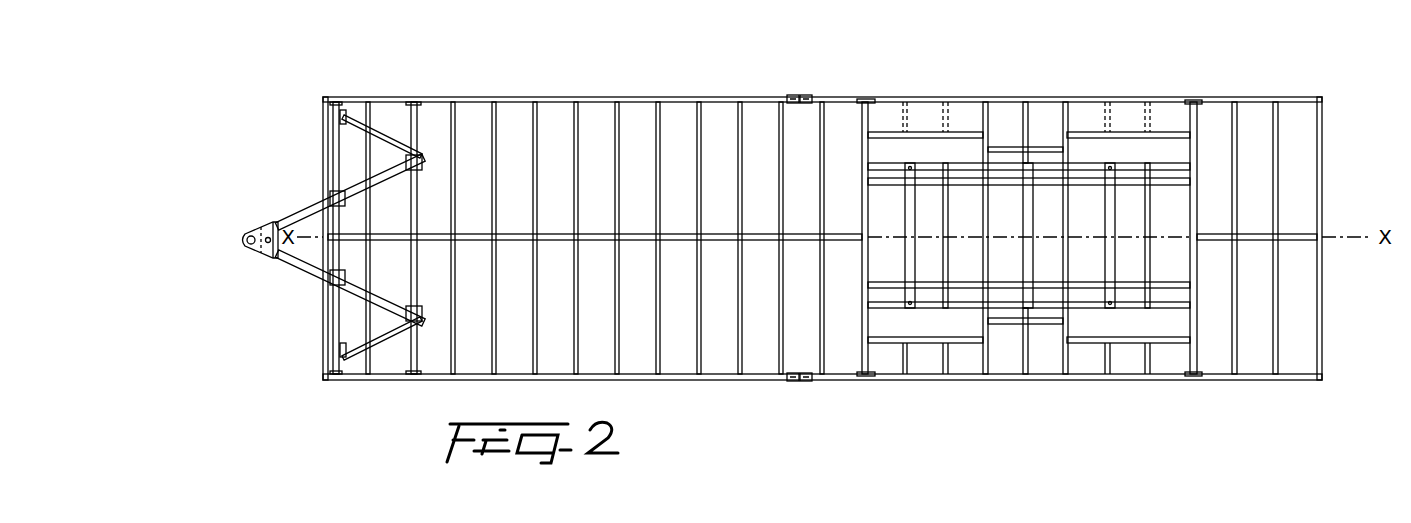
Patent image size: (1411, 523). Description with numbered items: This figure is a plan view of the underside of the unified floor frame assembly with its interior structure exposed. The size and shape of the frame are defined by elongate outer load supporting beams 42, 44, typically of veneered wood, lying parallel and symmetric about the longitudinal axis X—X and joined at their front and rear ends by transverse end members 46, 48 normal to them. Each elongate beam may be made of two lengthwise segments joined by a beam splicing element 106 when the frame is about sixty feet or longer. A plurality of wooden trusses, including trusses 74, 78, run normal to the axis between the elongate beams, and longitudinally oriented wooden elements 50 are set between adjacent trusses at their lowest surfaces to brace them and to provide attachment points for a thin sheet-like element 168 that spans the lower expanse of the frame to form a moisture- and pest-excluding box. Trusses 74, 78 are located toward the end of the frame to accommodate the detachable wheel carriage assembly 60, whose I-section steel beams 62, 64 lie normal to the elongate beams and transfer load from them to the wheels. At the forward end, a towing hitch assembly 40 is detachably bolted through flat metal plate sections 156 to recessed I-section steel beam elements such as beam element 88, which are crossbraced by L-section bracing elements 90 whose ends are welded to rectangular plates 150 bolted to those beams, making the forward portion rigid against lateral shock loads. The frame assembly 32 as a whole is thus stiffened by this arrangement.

The trailer frame 32 is at (605, 87).
The towing hitch assembly 40 is at (307, 208).
The elongate outer load supporting beam 42 is at (1046, 98).
The elongate outer load supporting beam 44 is at (718, 381).
The transverse end member 46 is at (323, 132).
The transverse end member 48 is at (1321, 196).
The elongate longitudinally oriented wooden element 50 is at (546, 242).
The wheel carriage assembly 60 is at (964, 163).
The I-section steel beam 62 is at (861, 262).
The I-section steel beam 64 is at (1199, 205).
The truss 74 is at (645, 347).
The truss 78 is at (1146, 353).
The I-section steel beam element 88 is at (337, 329).
The bracing element 90 is at (379, 134).
The beam splicing element 106 is at (804, 93).
The rectangular plate 150 is at (343, 112).
The flat metal plate section 156 is at (332, 293).
The thin sheet-like element 168 is at (1118, 152).